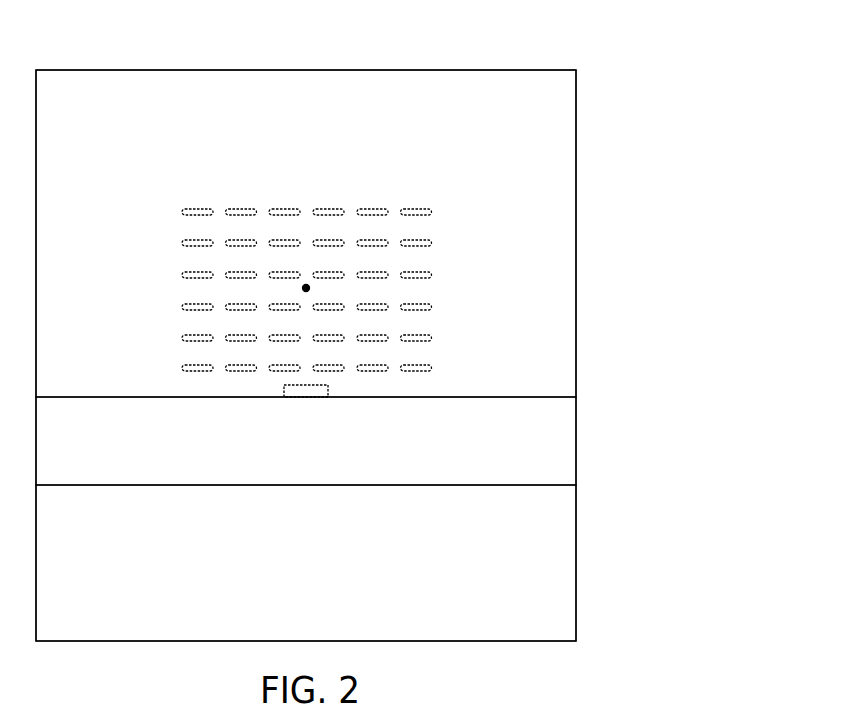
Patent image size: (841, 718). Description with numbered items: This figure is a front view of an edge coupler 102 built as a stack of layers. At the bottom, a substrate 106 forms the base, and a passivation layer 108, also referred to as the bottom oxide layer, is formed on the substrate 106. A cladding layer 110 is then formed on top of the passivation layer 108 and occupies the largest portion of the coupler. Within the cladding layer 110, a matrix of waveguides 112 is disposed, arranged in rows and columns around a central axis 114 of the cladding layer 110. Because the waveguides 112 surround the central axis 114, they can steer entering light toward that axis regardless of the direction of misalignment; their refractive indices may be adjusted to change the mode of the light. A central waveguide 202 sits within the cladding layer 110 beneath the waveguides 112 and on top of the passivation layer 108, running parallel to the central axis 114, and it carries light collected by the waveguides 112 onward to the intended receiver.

The edge coupler 102 is at (613, 65).
The substrate 106 is at (545, 591).
The passivation layer 108 is at (543, 443).
The cladding layer 110 is at (551, 158).
The waveguides 112 is at (447, 207).
The central axis 114 is at (302, 288).
The central waveguide 202 is at (322, 390).